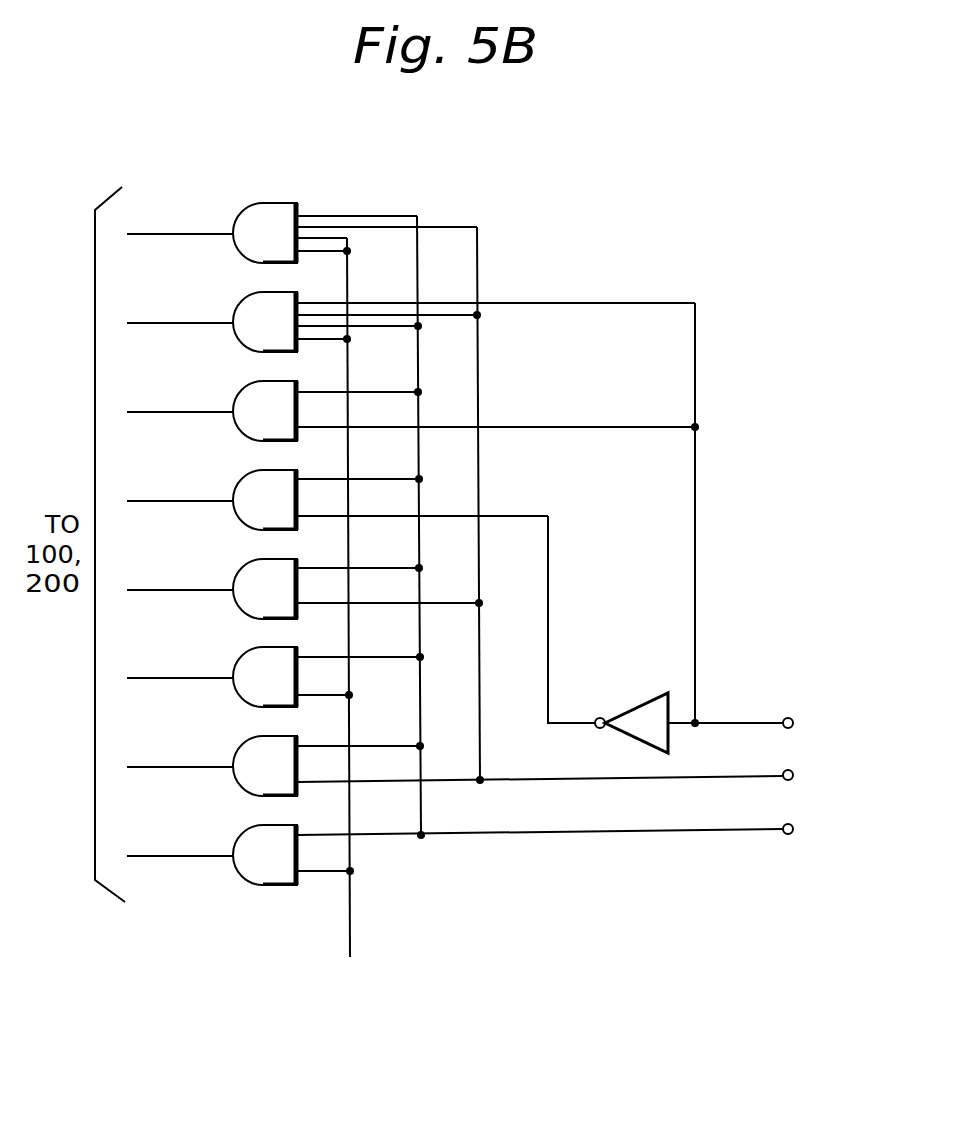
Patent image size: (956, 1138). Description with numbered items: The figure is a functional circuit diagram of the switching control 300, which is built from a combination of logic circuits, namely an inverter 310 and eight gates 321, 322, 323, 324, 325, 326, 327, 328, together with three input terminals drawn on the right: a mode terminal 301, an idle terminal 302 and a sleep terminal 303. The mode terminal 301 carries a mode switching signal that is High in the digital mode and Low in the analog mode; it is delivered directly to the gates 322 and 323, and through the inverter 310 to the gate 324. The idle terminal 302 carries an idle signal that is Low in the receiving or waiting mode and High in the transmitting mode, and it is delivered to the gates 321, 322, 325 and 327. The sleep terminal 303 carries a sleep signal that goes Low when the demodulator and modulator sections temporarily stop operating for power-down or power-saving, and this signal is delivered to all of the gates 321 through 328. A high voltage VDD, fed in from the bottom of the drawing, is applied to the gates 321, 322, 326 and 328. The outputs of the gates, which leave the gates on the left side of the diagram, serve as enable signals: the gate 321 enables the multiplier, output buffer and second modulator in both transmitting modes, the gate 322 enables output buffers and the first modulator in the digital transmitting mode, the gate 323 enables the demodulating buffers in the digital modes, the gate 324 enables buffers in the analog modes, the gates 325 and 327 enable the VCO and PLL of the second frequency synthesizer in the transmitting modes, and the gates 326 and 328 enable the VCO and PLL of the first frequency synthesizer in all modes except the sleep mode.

The switching control 300 is at (537, 853).
The mode terminal 301 is at (788, 717).
The idle terminal 302 is at (786, 770).
The sleep terminal 303 is at (786, 824).
The inverter 310 is at (653, 701).
The gate 321 is at (256, 263).
The gate 322 is at (255, 352).
The gate 323 is at (255, 442).
The gate 324 is at (255, 531).
The gate 325 is at (255, 619).
The gate 326 is at (258, 708).
The gate 327 is at (258, 797).
The gate 328 is at (262, 889).